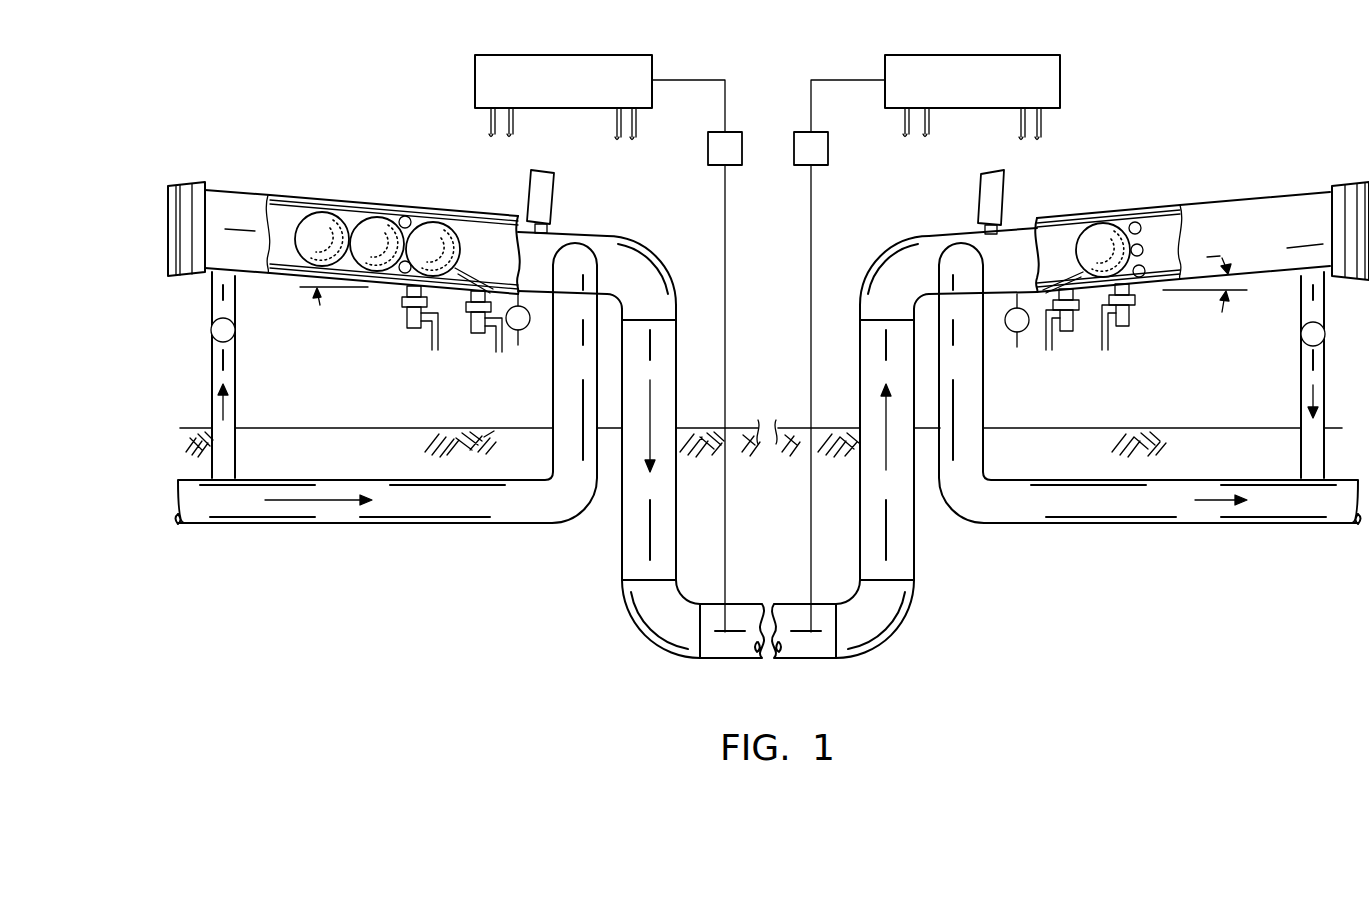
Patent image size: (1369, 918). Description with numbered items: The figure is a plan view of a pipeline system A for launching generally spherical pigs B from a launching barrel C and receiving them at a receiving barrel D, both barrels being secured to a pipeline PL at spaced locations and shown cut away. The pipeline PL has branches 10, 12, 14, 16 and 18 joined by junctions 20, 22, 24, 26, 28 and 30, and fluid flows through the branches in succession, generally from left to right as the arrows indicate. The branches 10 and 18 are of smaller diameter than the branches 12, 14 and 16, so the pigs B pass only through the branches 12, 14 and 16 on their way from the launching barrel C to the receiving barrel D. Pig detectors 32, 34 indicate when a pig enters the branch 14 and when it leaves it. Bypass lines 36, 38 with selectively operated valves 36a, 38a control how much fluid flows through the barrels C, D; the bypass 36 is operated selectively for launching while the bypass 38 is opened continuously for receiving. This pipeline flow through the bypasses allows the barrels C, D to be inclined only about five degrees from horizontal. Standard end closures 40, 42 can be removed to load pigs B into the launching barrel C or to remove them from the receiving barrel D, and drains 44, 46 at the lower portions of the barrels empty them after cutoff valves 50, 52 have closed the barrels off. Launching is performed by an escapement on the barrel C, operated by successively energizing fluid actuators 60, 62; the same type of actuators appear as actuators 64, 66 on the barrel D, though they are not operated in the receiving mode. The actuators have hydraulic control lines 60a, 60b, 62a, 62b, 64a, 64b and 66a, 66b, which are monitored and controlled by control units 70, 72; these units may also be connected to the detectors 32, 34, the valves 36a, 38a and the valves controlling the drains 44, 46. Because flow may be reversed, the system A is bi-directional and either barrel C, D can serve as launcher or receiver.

The branch 10 is at (477, 522).
The branch 12 is at (665, 404).
The branch 14 is at (733, 648).
The branch 16 is at (868, 378).
The branch 18 is at (1172, 514).
The junction 20 is at (596, 234).
The junction 22 is at (638, 260).
The junction 24 is at (667, 634).
The junction 26 is at (902, 641).
The junction 28 is at (887, 256).
The junction 30 is at (942, 237).
The pig detector 32 is at (742, 142).
The pig detector 34 is at (828, 143).
The bypass line 36 is at (232, 388).
The valve 36a is at (236, 332).
The bypass line 38 is at (1302, 390).
The valve 38a is at (1302, 338).
The end closure 40 is at (188, 182).
The end closure 42 is at (1352, 185).
The drain 44 is at (531, 318).
The drain 46 is at (1005, 320).
The cutoff valve 50 is at (553, 200).
The cutoff valve 52 is at (1003, 203).
The fluid actuator 60 is at (462, 340).
The hydraulic control line 60a is at (620, 133).
The hydraulic control line 60b is at (636, 125).
The fluid actuator 62 is at (403, 321).
The hydraulic control line 62a is at (491, 121).
The hydraulic control line 62b is at (513, 128).
The fluid actuator 64 is at (1072, 343).
The hydraulic control line 64a is at (906, 130).
The hydraulic control line 64b is at (928, 130).
The fluid actuator 66 is at (1131, 324).
The hydraulic control line 66a is at (1023, 130).
The hydraulic control line 66b is at (1040, 128).
The control unit 70 is at (652, 72).
The control unit 72 is at (1060, 76).
The pipeline system A is at (1104, 162).
The spherical pig B is at (368, 232).
The launching barrel C is at (393, 208).
The receiving barrel D is at (1265, 192).
The pipeline PL is at (612, 570).